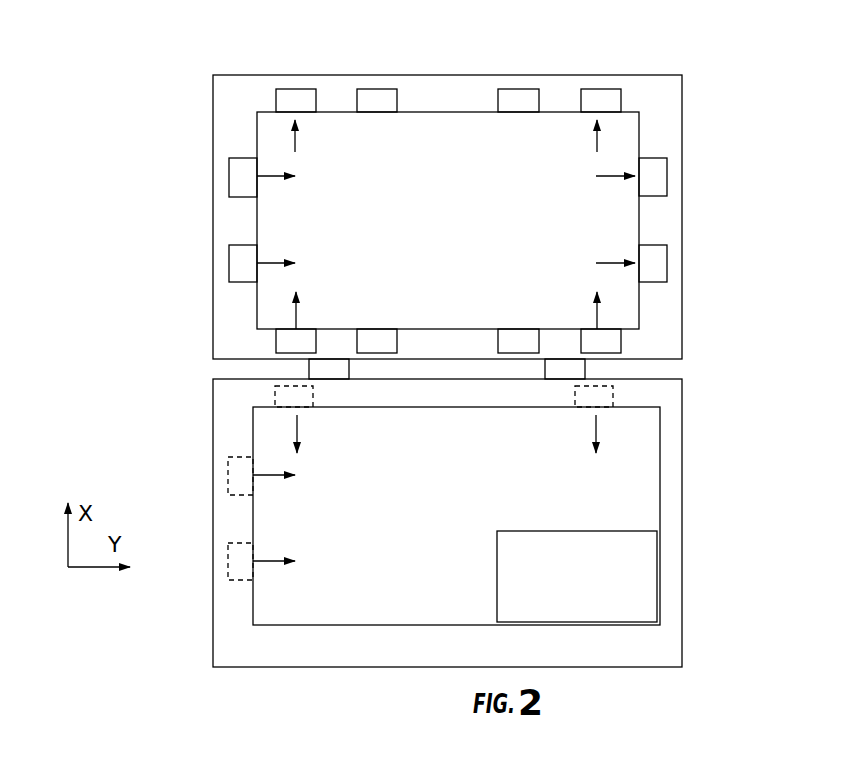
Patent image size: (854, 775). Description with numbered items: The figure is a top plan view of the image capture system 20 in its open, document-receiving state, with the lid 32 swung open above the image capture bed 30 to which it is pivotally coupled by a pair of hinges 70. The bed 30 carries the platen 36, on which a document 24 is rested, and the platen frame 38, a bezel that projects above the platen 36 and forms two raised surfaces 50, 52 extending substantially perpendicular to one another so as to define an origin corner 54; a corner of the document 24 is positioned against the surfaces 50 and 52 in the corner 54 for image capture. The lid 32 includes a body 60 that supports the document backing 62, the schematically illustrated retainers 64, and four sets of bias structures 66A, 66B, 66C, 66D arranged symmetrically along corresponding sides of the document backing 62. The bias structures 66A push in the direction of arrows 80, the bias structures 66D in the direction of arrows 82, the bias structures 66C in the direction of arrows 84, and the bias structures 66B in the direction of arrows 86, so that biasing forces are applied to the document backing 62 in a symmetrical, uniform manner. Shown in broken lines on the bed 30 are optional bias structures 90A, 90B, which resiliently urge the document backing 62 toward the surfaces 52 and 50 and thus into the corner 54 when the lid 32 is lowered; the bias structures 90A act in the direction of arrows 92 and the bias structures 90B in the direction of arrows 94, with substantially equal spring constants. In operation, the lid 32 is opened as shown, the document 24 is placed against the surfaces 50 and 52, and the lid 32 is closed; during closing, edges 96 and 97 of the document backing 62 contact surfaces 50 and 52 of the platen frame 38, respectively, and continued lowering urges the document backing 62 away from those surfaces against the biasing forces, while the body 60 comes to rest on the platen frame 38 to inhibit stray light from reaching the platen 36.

The image capture system 20 is at (210, 52).
The document 24 is at (592, 545).
The image capture bed 30 is at (495, 523).
The lid 32 is at (483, 217).
The platen 36 is at (433, 616).
The platen frame 38 is at (676, 470).
The raised surface 50 is at (660, 603).
The raised surface 52 is at (650, 628).
The origin corner 54 is at (660, 628).
The body 60 is at (684, 98).
The document backing 62 is at (409, 215).
The retainers 64 is at (398, 96).
The bias structures 66A is at (307, 333).
The bias structures 66B is at (647, 191).
The bias structures 66C is at (310, 97).
The bias structures 66D is at (233, 160).
The hinges 70 is at (315, 372).
The arrows 80 is at (297, 302).
The arrows 82 is at (270, 178).
The arrows 84 is at (297, 139).
The arrows 86 is at (601, 175).
The bias structures 90A is at (313, 393).
The bias structures 90B is at (243, 495).
The arrows 92 is at (300, 428).
The arrows 94 is at (268, 479).
The edge 96 is at (640, 137).
The edge 97 is at (633, 110).